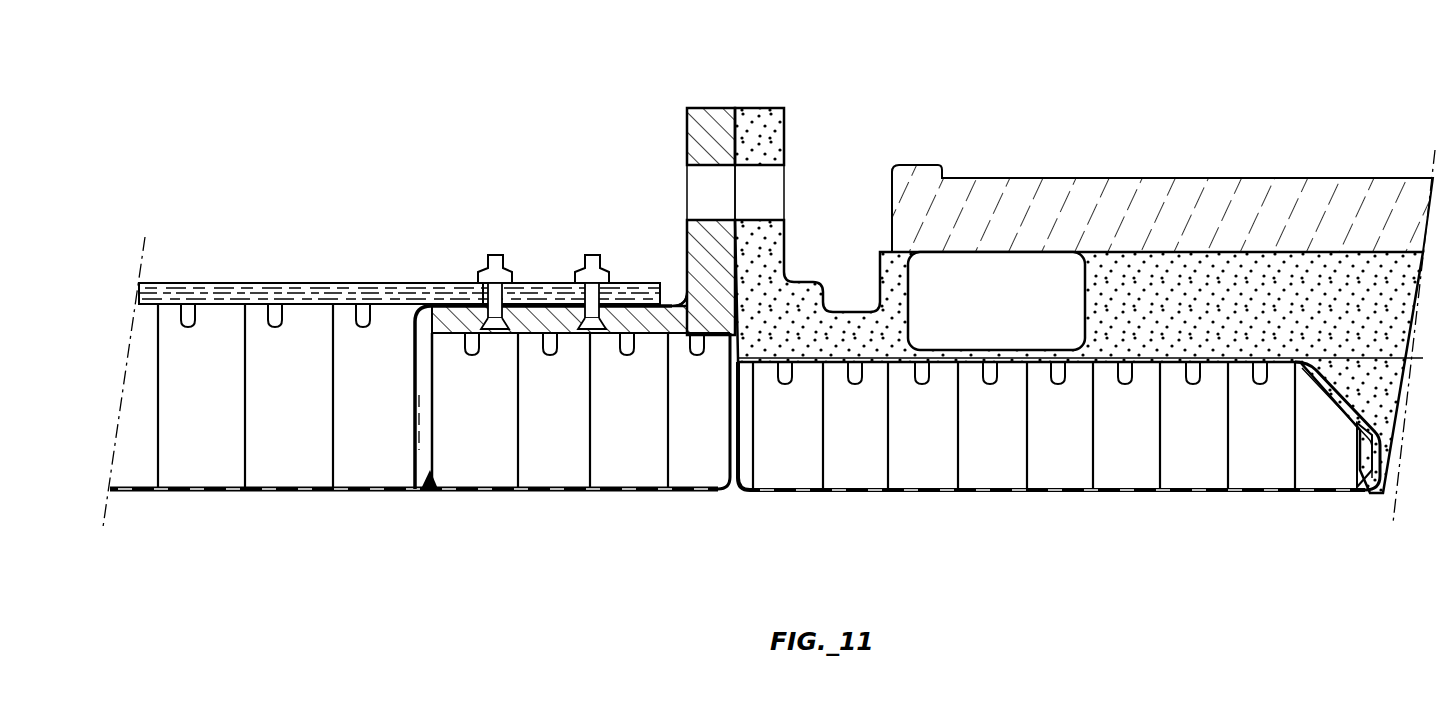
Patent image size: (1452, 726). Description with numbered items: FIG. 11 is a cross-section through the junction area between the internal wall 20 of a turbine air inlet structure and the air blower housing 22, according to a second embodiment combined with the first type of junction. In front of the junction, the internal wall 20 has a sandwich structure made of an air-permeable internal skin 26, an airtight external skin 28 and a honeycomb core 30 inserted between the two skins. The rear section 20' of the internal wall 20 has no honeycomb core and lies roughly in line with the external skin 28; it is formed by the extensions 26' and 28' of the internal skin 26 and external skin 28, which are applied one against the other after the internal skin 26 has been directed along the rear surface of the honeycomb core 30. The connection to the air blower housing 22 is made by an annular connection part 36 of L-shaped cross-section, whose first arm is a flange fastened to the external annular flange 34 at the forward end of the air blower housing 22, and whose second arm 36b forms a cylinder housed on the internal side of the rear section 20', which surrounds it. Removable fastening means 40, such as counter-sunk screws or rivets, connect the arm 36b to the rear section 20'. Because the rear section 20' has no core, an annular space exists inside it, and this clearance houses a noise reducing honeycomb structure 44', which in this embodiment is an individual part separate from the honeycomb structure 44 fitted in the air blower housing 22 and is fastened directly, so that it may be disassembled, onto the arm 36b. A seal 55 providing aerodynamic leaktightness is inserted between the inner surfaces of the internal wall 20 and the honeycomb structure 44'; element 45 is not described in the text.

The internal wall 20 is at (303, 251).
The external skin 28 is at (311, 249).
The internal skin 26 is at (420, 453).
The honeycomb core 30 is at (270, 447).
The extension of internal skin 26' is at (557, 344).
The extension of external skin 28' is at (571, 249).
The rear section of the internal wall 20' is at (572, 251).
The annular connection part 36 is at (686, 118).
The second arm 36b is at (452, 337).
The fastening means 40 is at (590, 330).
The external annular flange 34 is at (775, 130).
The air blower housing 22 is at (1186, 251).
The honeycomb structure 44 is at (1059, 469).
The noise reducing honeycomb structure 44' is at (584, 453).
The tray flange 45 is at (418, 455).
The seal 55 is at (425, 493).